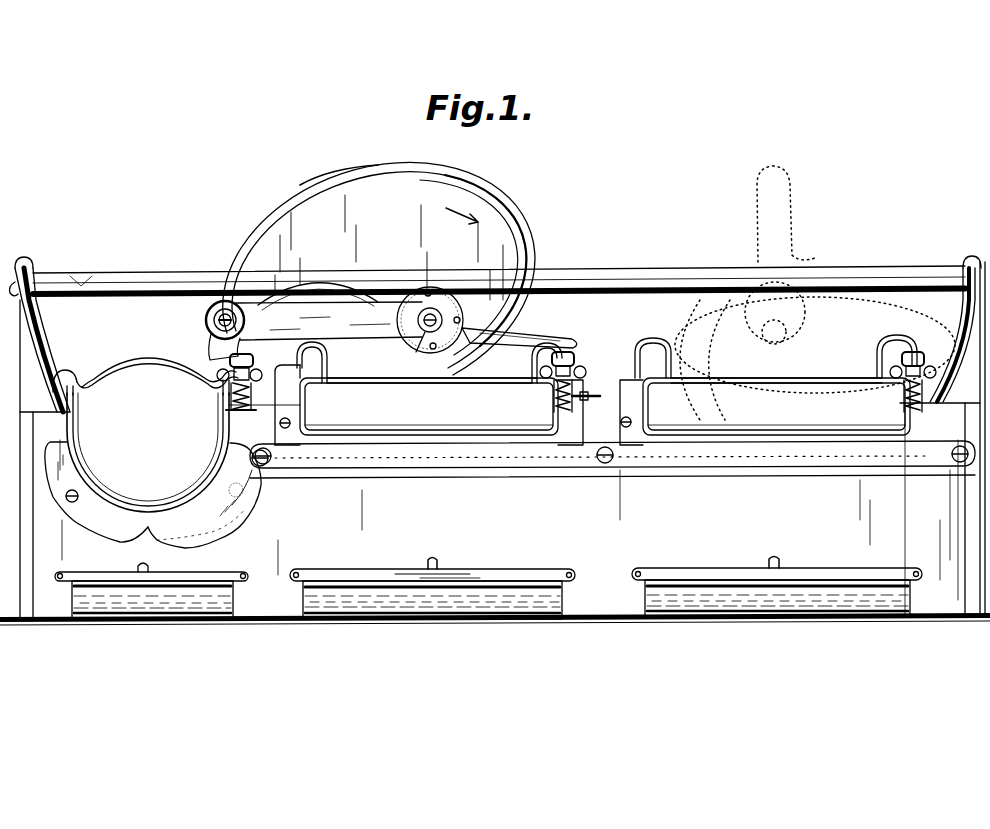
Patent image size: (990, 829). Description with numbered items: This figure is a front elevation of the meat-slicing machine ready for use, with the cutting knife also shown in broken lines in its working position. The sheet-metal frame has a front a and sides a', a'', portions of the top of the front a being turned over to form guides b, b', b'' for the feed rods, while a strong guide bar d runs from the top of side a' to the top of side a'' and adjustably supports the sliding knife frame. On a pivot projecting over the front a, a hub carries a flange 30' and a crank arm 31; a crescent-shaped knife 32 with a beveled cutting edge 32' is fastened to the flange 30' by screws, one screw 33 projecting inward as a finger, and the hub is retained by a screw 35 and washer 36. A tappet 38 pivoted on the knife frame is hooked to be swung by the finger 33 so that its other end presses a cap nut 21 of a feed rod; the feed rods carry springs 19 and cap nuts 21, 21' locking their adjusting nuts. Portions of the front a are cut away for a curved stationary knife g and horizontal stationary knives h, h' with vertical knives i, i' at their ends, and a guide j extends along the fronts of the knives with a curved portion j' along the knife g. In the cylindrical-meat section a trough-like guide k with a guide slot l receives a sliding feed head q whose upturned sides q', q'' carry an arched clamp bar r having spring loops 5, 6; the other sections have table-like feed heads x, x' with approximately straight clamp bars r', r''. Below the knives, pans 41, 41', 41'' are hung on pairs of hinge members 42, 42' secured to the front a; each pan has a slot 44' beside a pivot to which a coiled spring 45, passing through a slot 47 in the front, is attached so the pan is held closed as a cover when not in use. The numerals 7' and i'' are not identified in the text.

The front a is at (495, 443).
The side a' is at (40, 316).
The side a'' is at (955, 306).
The guide bar d is at (603, 270).
The knife 32 is at (379, 268).
The beveled cutting edge 32' is at (315, 182).
The crank arm 31 is at (256, 312).
The flange 30' is at (441, 303).
The screw 33 is at (425, 291).
The washer 36 is at (420, 314).
The screw 35 is at (417, 352).
The tappet 38 is at (545, 337).
The spring loop 6 is at (531, 358).
The clamp bar r is at (432, 371).
The spring loop 5 is at (328, 352).
The clamp bar r'' is at (794, 359).
The arc guide 7' is at (145, 363).
The cap nut 21 is at (251, 372).
The cap nut 21' is at (580, 366).
The spring 19 is at (586, 392).
The guide b'' is at (917, 385).
The feed-head x is at (429, 406).
The vertical knife i is at (301, 405).
The horizontal stationary knife h is at (429, 421).
The vertical knife i' is at (442, 413).
The guide slot l is at (458, 434).
The guide b' is at (543, 412).
The feed-head x' is at (776, 406).
The bracket i'' is at (648, 412).
The horizontal stationary knife h' is at (776, 418).
The clamp bar r' is at (797, 395).
The guide j is at (612, 470).
The curved stationary knife g is at (138, 518).
The feed head q is at (148, 452).
The upturned side q' is at (89, 401).
The upturned side q'' is at (203, 395).
The guide b is at (241, 424).
The trough-like guide k is at (208, 492).
The curved portion j' is at (204, 524).
The pan 41 is at (151, 618).
The hinge member 42 is at (228, 557).
The pan 41' is at (432, 617).
The slot 47 is at (432, 558).
The slot 44' is at (428, 558).
The coiled spring 45 is at (440, 566).
The hinge member 42' is at (568, 553).
The pan 41'' is at (777, 610).